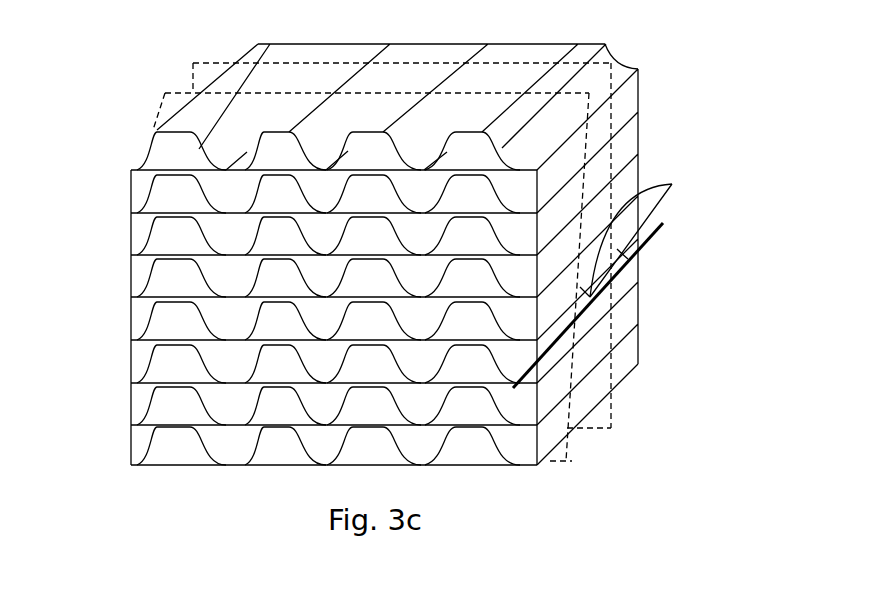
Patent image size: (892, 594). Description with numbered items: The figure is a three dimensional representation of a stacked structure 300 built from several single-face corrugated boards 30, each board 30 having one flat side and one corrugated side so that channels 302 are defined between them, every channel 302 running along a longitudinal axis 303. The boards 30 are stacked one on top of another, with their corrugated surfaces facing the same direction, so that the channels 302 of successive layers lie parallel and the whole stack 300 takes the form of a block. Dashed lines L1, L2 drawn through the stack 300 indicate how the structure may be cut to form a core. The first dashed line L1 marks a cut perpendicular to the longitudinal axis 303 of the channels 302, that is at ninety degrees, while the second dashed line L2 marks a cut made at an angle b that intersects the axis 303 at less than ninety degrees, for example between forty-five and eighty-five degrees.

The single-face corrugated board 30 is at (121, 235).
The three dimensional stacked structure 300 is at (383, 254).
The channels 302 is at (140, 166).
The longitudinal axis 303 is at (643, 245).
The angle b is at (635, 232).
The first dashed line L1 is at (604, 352).
The second dashed line L2 is at (585, 430).